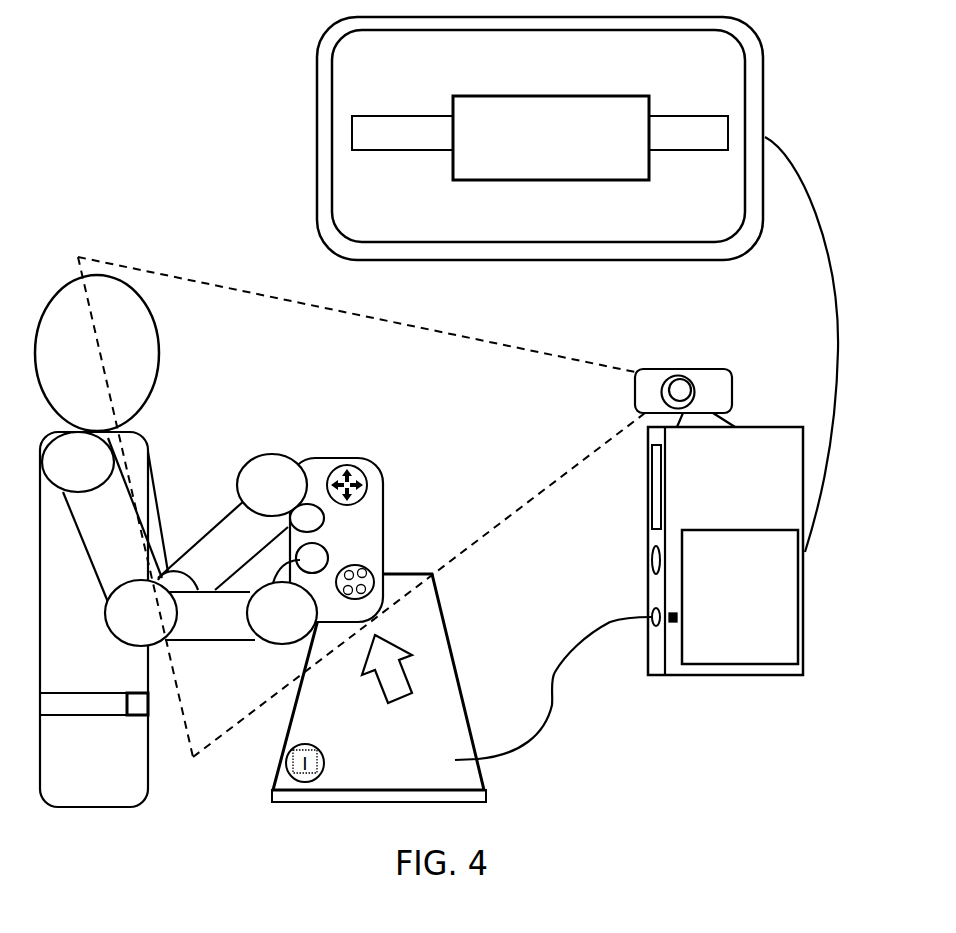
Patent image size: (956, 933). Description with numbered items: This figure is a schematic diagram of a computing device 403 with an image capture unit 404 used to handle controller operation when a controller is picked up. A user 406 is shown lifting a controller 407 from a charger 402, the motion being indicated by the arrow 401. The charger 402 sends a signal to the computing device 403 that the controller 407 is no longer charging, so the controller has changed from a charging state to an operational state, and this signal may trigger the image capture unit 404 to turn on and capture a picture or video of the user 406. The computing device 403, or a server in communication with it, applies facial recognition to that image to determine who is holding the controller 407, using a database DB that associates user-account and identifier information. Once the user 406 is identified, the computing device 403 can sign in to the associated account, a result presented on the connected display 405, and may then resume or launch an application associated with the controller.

The arrow 401 is at (450, 684).
The charger 402 is at (442, 607).
The computing device 403 is at (743, 406).
The image capture unit 404 is at (727, 366).
The display showing sign-in status 405 is at (623, 96).
The user 406 is at (154, 318).
The controller 407 is at (385, 520).